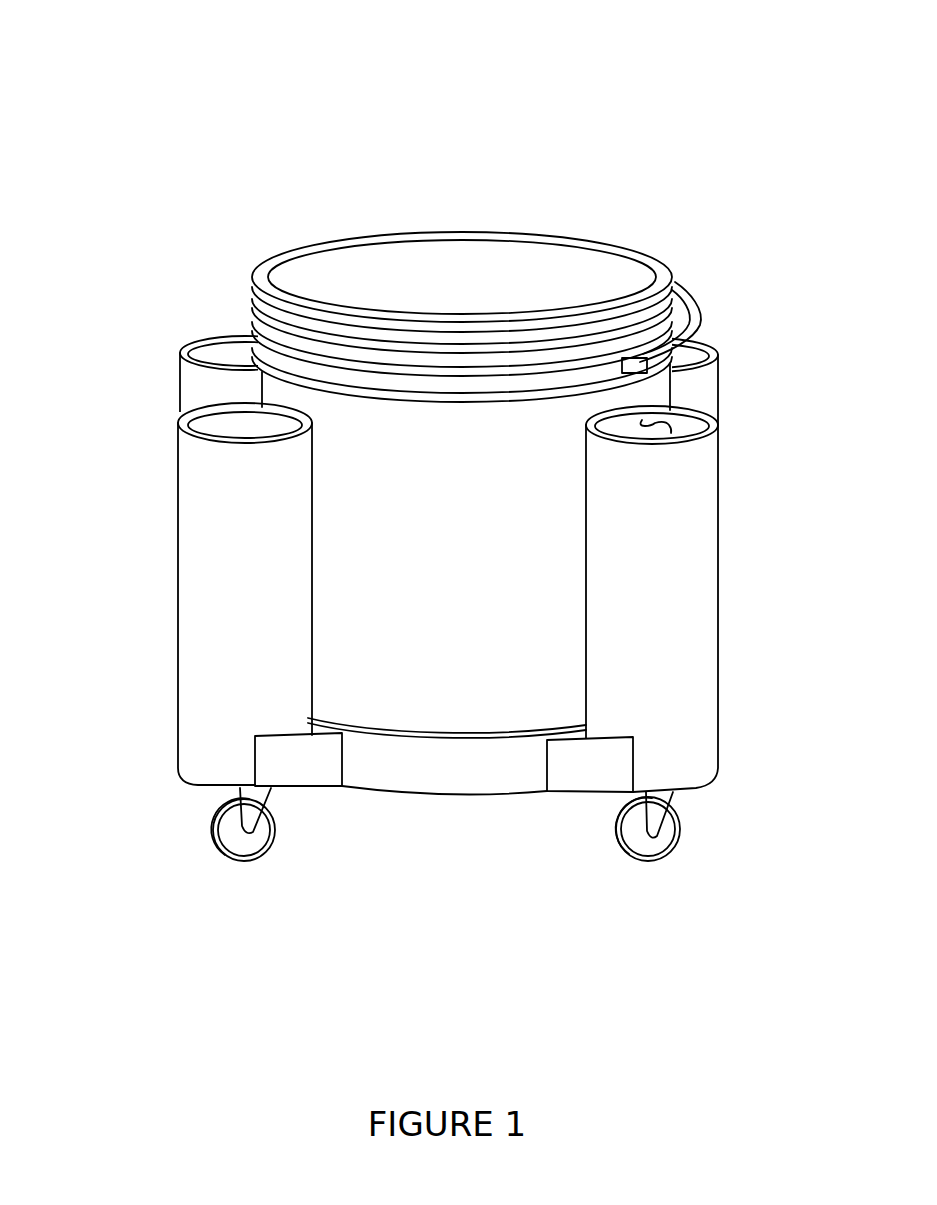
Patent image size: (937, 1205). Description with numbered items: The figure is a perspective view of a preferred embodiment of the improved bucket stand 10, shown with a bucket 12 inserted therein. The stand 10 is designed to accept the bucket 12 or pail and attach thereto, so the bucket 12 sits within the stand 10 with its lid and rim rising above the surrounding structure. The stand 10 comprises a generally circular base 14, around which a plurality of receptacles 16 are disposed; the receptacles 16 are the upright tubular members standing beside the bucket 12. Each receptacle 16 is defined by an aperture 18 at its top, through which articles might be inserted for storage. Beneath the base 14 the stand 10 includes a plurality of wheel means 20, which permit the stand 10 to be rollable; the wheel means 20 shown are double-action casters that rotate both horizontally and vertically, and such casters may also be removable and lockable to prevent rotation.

The bucket stand 10 is at (128, 388).
The bucket 12 is at (447, 232).
The base 14 is at (530, 765).
The receptacles 16 is at (685, 600).
The aperture 18 is at (660, 412).
The wheel means 20 is at (613, 850).